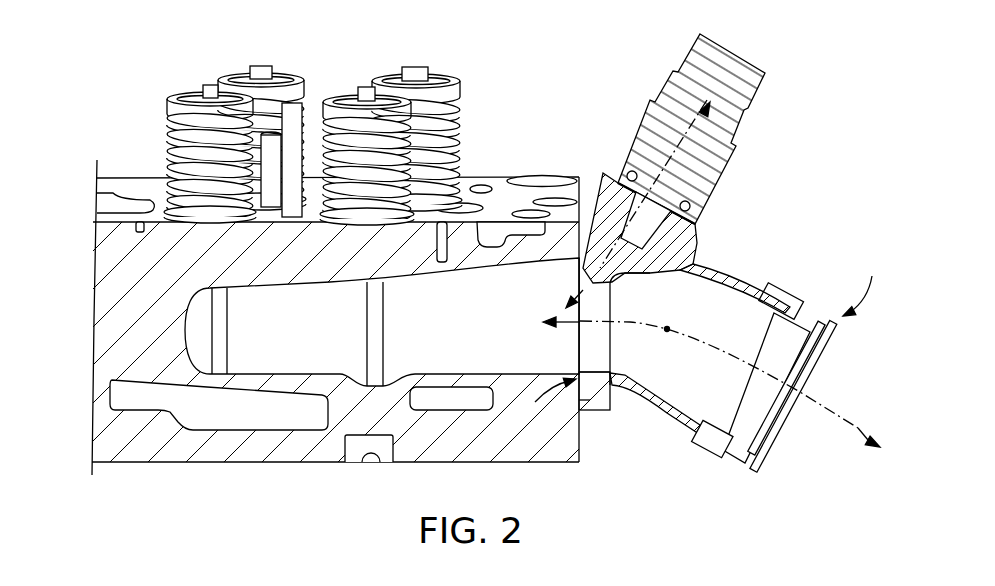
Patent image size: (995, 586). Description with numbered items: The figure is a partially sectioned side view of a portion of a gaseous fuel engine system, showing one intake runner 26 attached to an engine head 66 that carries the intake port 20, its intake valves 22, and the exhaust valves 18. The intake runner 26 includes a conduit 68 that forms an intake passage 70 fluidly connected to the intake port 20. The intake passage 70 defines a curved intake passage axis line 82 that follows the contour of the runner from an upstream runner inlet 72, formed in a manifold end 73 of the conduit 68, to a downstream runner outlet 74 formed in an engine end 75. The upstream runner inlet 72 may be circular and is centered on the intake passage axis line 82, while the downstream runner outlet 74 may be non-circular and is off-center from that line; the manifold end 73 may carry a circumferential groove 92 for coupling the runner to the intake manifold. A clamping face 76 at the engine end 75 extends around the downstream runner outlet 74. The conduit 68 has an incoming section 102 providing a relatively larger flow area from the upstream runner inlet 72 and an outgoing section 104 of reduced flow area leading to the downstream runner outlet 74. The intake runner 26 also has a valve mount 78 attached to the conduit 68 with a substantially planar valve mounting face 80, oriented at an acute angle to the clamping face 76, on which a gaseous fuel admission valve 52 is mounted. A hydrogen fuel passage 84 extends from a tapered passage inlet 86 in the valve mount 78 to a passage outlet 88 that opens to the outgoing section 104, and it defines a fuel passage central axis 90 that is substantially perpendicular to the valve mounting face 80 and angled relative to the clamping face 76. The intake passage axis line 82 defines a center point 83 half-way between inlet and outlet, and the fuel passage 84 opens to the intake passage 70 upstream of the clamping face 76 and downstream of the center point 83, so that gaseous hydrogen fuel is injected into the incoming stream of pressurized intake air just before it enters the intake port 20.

The exhaust valves 18 is at (262, 66).
The intake port 20 is at (495, 278).
The intake valves 22 is at (221, 322).
The intake runner 26 is at (748, 288).
The gaseous fuel admission valve 52 is at (736, 58).
The engine head 66 is at (94, 268).
The conduit 68 is at (698, 275).
The intake passage 70 is at (740, 292).
The upstream runner inlet 72 is at (822, 338).
The manifold end 73 is at (863, 283).
The downstream runner outlet 74 is at (580, 372).
The engine end 75 is at (542, 401).
The clamping face 76 is at (577, 402).
The valve mount 78 is at (690, 244).
The valve mounting face 80 is at (702, 212).
The intake passage axis line 82 is at (860, 430).
The center point 83 is at (667, 333).
The hydrogen fuel passage 84 is at (606, 188).
The passage inlet 86 is at (657, 216).
The passage outlet 88 is at (597, 286).
The fuel passage central axis 90 is at (682, 146).
The circumferential groove 92 is at (822, 315).
The incoming section 102 is at (698, 419).
The outgoing section 104 is at (602, 405).